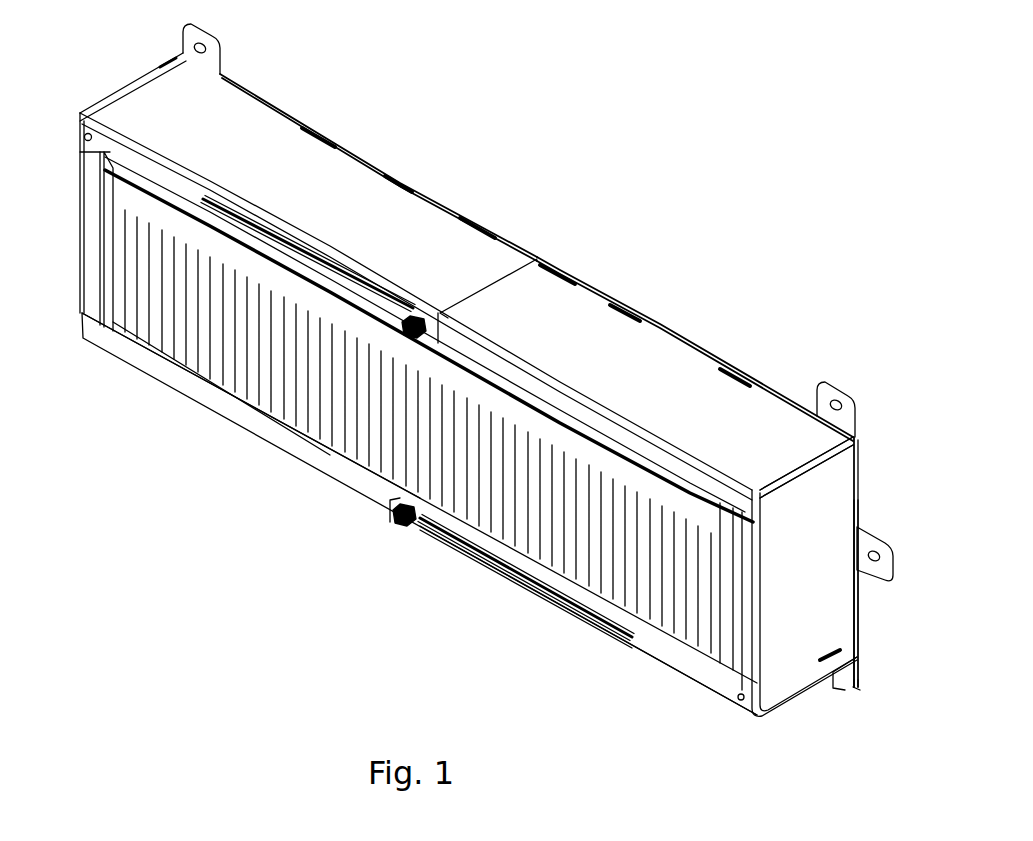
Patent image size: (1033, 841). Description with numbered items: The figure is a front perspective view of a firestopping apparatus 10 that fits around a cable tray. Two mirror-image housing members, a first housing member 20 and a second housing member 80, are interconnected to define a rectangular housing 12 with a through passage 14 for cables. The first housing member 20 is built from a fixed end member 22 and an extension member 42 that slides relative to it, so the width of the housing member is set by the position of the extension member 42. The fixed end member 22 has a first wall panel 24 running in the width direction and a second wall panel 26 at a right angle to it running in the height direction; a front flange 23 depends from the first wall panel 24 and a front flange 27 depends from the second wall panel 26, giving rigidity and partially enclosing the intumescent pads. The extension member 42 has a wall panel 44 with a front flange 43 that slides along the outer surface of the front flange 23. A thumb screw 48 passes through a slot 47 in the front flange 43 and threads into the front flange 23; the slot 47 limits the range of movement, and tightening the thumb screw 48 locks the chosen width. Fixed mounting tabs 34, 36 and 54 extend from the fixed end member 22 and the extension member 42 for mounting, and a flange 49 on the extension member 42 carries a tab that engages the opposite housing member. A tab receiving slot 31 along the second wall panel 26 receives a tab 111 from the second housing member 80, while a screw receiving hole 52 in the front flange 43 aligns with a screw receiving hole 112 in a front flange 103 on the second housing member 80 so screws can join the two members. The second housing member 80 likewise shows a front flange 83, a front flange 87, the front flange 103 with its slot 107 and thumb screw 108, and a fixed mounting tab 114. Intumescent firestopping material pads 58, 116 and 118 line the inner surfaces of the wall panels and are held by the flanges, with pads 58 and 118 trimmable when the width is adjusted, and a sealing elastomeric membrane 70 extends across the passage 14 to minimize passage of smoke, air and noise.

The firestopping apparatus 10 is at (736, 228).
The housing 12 is at (324, 101).
The through passage 14 is at (721, 680).
The first housing member 20 is at (867, 492).
The fixed end member 22 is at (773, 387).
The front flange 23 is at (650, 448).
The first wall panel 24 is at (585, 297).
The second wall panel 26 is at (856, 612).
The front flange 27 is at (758, 668).
The tab receiving slot 31 is at (843, 657).
The fixed mounting tab 34 is at (856, 403).
The fixed mounting tab 36 is at (895, 568).
The extension member 42 is at (262, 90).
The front flange 43 is at (110, 148).
The wall panel 44 is at (352, 168).
The slot 47 is at (390, 294).
The thumb screw 48 is at (448, 308).
The flange 49 is at (163, 70).
The screw receiving hole 52 is at (84, 137).
The fixed mounting tab 54 is at (224, 44).
The intumescent firestopping material pad 58 is at (572, 418).
The sealing elastomeric membrane 70 is at (126, 199).
The second housing member 80 is at (118, 378).
The front flange 83 is at (302, 452).
The front flange 87 is at (88, 300).
The front flange 103 is at (678, 667).
The slot 107 is at (516, 575).
The thumb screw 108 is at (406, 530).
The tab 111 is at (835, 667).
The screw receiving hole 112 is at (743, 702).
The fixed mounting tab 114 is at (860, 683).
The intumescent firestopping material pad 116 is at (100, 165).
The intumescent firestopping material pad 118 is at (225, 388).